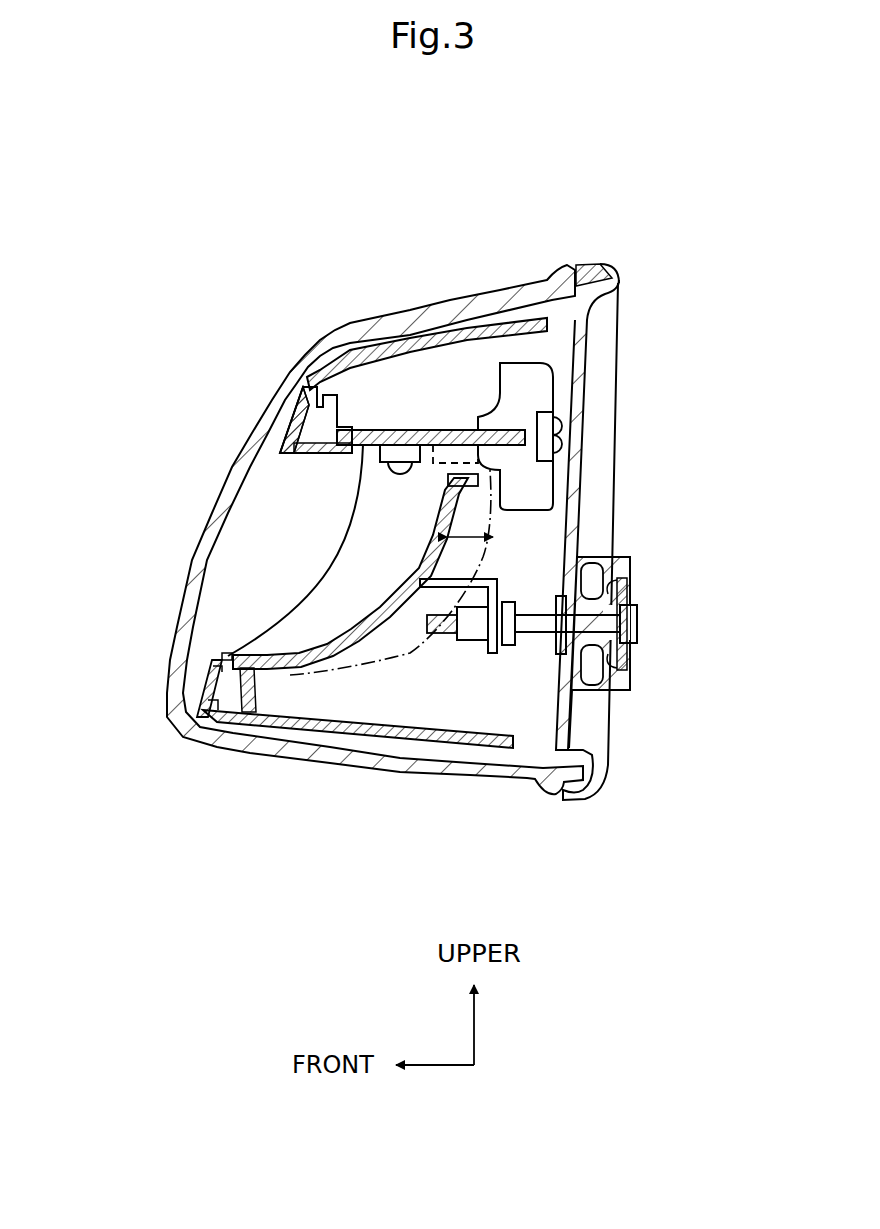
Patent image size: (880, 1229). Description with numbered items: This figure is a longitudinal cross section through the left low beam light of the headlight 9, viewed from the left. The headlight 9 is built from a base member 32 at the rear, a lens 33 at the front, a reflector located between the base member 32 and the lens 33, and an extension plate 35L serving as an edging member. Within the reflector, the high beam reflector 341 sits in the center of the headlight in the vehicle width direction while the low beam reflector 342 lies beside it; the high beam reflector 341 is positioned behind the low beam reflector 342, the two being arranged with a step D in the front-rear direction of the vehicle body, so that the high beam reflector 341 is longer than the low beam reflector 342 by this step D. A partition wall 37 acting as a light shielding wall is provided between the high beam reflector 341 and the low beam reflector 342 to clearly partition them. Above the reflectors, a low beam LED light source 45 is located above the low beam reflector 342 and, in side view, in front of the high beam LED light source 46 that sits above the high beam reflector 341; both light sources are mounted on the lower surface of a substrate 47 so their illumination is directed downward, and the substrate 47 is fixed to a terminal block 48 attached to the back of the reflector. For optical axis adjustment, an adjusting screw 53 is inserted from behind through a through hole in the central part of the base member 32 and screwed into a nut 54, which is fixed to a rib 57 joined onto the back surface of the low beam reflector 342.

The headlight 9 is at (455, 208).
The base member 32 is at (580, 403).
The lens 33 is at (268, 416).
The extension plate 35L is at (290, 408).
The partition wall 37 is at (360, 578).
The low beam LED light source 45 is at (383, 463).
The high beam LED light source 46 is at (440, 462).
The substrate 47 is at (408, 430).
The terminal block 48 is at (585, 366).
The adjusting screw 53 is at (630, 622).
The nut 54 is at (472, 632).
The rib 57 is at (503, 580).
The high beam reflector 341 is at (369, 672).
The low beam reflector 342 is at (412, 625).
The step D is at (447, 537).